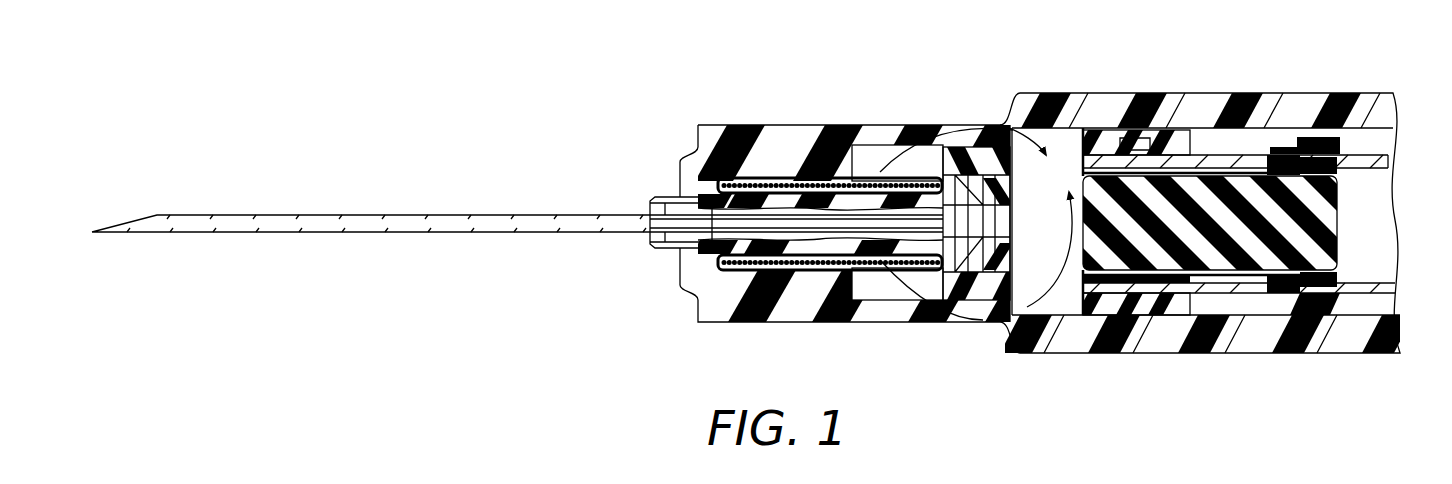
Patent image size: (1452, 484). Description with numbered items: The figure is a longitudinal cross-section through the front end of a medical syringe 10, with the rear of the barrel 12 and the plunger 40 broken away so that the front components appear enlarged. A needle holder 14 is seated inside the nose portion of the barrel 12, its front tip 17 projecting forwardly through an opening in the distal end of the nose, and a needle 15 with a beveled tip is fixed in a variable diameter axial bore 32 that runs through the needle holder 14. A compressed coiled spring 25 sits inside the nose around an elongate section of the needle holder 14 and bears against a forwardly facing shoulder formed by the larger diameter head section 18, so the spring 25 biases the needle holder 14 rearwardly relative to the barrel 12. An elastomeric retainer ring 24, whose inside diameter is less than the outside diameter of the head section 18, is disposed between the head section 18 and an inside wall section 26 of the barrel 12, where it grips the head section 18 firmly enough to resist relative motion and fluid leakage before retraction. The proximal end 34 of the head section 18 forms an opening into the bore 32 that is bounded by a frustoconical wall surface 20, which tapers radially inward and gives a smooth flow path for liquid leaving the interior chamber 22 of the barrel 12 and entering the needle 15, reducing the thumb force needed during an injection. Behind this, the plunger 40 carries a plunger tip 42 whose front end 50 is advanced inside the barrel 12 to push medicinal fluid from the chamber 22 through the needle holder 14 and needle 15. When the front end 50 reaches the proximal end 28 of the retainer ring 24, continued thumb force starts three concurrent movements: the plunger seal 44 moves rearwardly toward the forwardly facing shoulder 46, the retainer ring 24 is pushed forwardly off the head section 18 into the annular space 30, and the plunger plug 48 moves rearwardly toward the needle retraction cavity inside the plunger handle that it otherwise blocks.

The syringe 10 is at (526, 78).
The barrel 12 is at (786, 135).
The needle holder 14 is at (805, 250).
The needle 15 is at (320, 233).
The front tip 17 is at (670, 197).
The head section 18 is at (985, 178).
The frustoconical wall surface 20 is at (1043, 298).
The interior chamber 22 is at (1078, 160).
The elastomeric retainer ring 24 is at (970, 297).
The coiled spring 25 is at (762, 183).
The inside wall section 26 is at (883, 153).
The proximal end 28 is at (1012, 225).
The annular space 30 is at (870, 262).
The variable diameter axial bore 32 is at (798, 207).
The proximal end 34 is at (1013, 140).
The plunger 40 is at (1363, 140).
The plunger tip 42 is at (1265, 290).
The plunger seal 44 is at (1198, 296).
The forwardly facing shoulder 46 is at (1297, 147).
The plunger plug 48 is at (1327, 258).
The front end 50 is at (1092, 162).